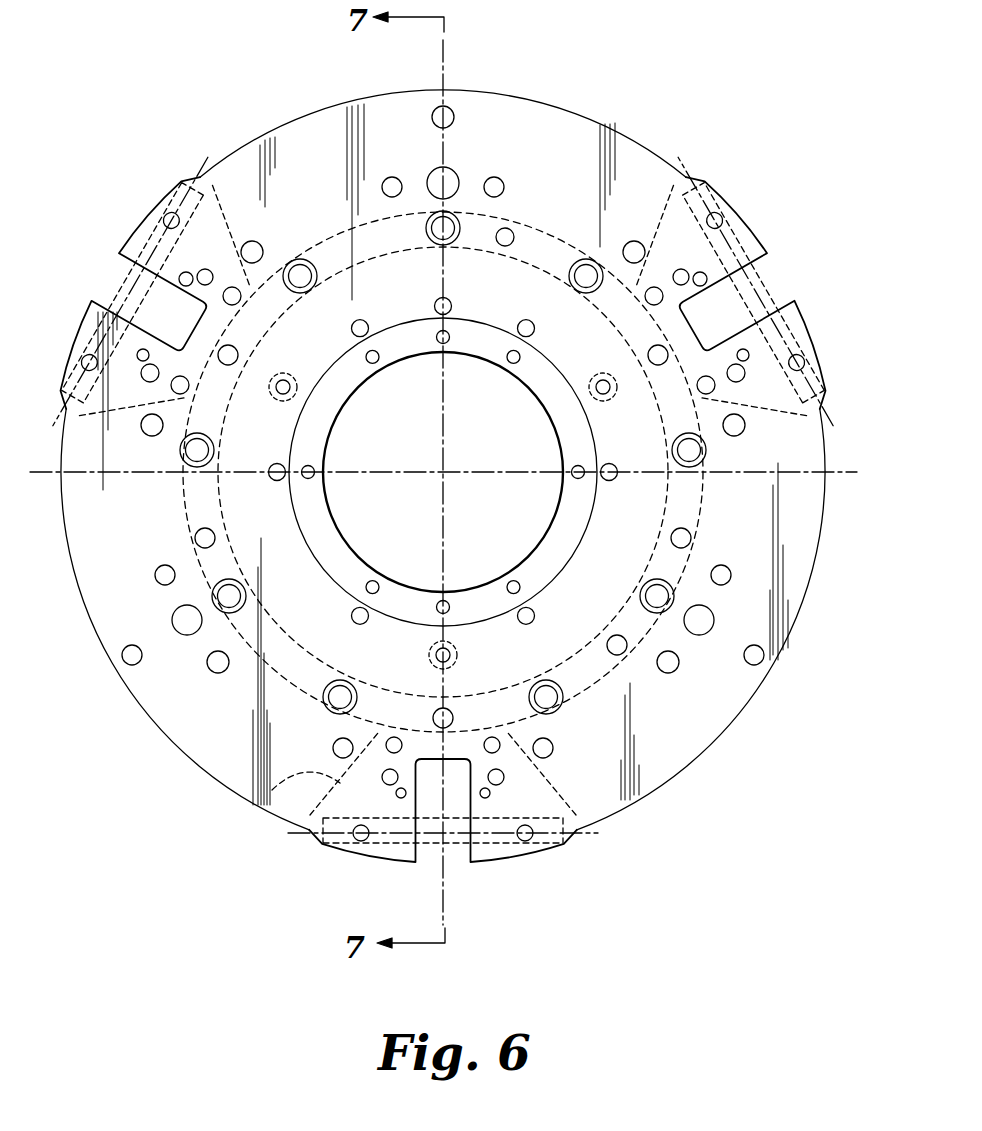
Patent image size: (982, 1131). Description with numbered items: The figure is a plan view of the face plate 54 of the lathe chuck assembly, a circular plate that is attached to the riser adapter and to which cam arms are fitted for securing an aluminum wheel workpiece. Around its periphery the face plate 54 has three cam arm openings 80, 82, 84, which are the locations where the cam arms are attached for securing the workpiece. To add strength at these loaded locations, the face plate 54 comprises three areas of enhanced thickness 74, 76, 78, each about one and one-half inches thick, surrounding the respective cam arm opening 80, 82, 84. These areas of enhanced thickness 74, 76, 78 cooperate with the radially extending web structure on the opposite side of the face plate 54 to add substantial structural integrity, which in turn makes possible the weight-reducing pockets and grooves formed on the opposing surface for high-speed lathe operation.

The face plate 54 is at (797, 482).
The area of enhanced thickness 74 is at (672, 180).
The area of enhanced thickness 76 is at (222, 220).
The area of enhanced thickness 78 is at (283, 790).
The cam arm opening 80 is at (762, 268).
The cam arm opening 82 is at (125, 268).
The cam arm opening 84 is at (457, 852).